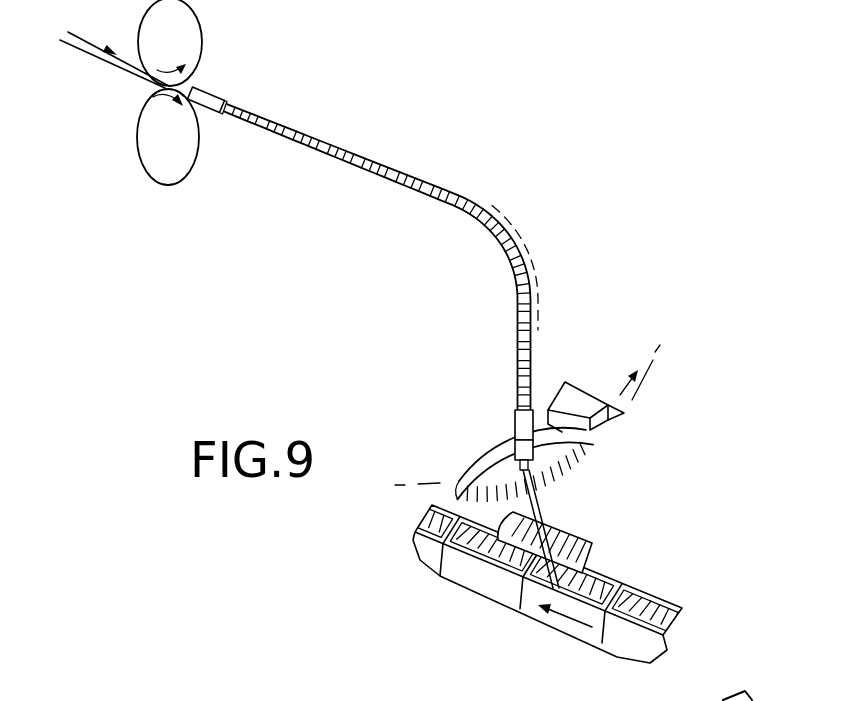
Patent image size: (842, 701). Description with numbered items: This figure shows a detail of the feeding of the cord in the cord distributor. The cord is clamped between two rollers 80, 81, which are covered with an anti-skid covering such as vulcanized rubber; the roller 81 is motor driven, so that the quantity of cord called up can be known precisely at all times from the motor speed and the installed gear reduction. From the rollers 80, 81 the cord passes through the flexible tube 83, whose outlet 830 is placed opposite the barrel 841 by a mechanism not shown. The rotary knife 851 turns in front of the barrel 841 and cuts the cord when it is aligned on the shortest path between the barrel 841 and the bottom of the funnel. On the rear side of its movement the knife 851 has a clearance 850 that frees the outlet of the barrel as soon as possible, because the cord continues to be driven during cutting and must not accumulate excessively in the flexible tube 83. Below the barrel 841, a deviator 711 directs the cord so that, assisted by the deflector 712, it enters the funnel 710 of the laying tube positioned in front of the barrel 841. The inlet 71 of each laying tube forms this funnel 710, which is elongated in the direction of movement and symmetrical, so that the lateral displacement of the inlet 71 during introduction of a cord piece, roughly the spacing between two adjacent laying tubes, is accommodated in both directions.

The roller 80 is at (193, 25).
The roller 81 is at (187, 170).
The flexible tube 83 is at (388, 183).
The outlet of the flexible tube 830 is at (515, 422).
The barrel 841 is at (515, 452).
The rotary knife 851 is at (587, 376).
The clearance 850 is at (624, 413).
The deviator 711 is at (585, 466).
The deflector 712 is at (565, 537).
The inlet 71 is at (602, 561).
The funnel 710 is at (613, 578).